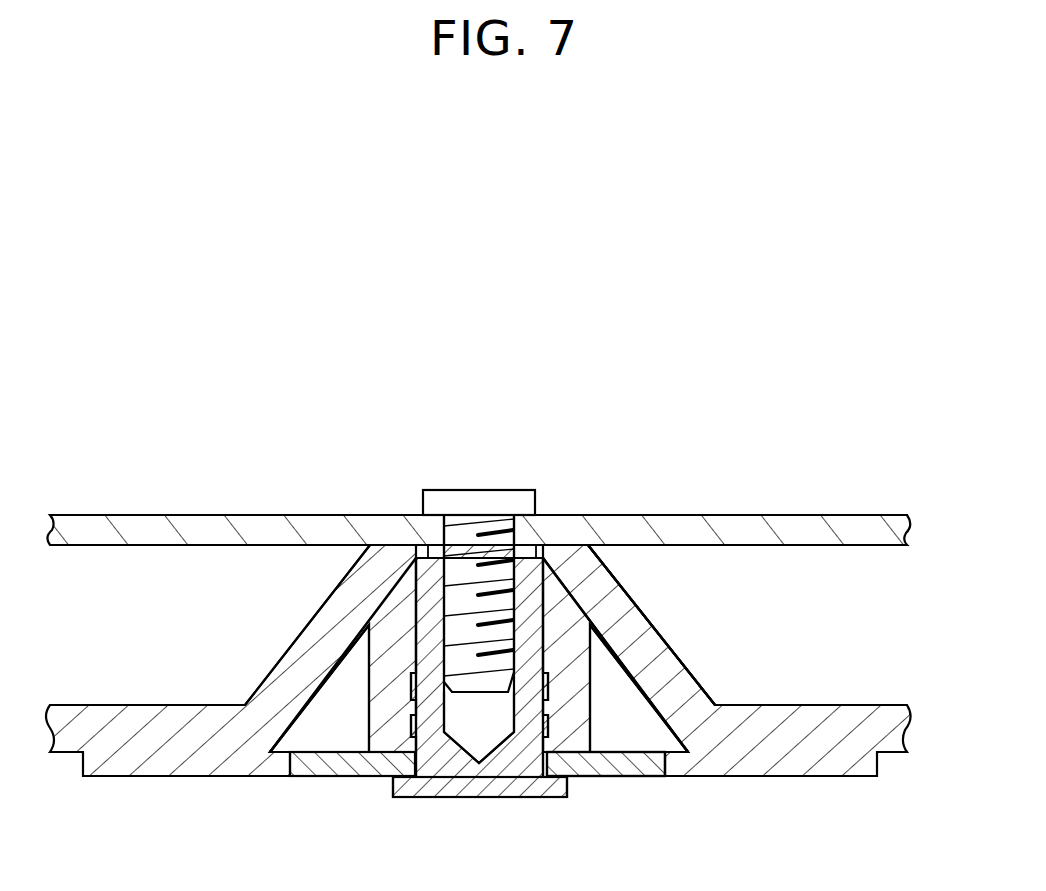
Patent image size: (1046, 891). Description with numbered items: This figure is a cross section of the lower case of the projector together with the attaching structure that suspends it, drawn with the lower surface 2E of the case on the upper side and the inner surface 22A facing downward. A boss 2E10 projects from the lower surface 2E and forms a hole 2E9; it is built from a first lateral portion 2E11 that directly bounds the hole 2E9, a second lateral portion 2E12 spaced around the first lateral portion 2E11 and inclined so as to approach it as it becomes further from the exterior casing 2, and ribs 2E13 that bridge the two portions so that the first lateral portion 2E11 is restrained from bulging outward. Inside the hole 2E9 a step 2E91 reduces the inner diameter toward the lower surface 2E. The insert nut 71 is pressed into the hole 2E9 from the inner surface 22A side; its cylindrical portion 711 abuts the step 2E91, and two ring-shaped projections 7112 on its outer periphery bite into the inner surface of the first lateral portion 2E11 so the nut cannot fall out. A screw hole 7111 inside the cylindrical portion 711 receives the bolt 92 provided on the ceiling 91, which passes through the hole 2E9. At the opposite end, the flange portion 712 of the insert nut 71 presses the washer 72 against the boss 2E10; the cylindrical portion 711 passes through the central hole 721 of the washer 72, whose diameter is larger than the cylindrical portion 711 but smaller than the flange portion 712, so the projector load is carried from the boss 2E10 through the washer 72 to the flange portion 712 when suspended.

The exterior casing 2 is at (888, 753).
The inner surface 22A is at (802, 778).
The lower surface 2E is at (865, 705).
The hole 2E9 is at (527, 553).
The step 2E91 is at (432, 553).
The boss 2E10 is at (773, 556).
The first lateral portion 2E11 is at (567, 655).
The second lateral portion 2E12 is at (640, 652).
The rib 2E13 is at (623, 722).
The insert nut 71 is at (475, 798).
The cylindrical portion 711 is at (438, 560).
The screw hole 7111 is at (445, 645).
The ring-shaped projection 7112 is at (410, 678).
The flange portion 712 is at (400, 786).
The washer 72 is at (630, 765).
The hole 721 is at (552, 763).
The ceiling 91 is at (890, 515).
The bolt 92 is at (482, 490).